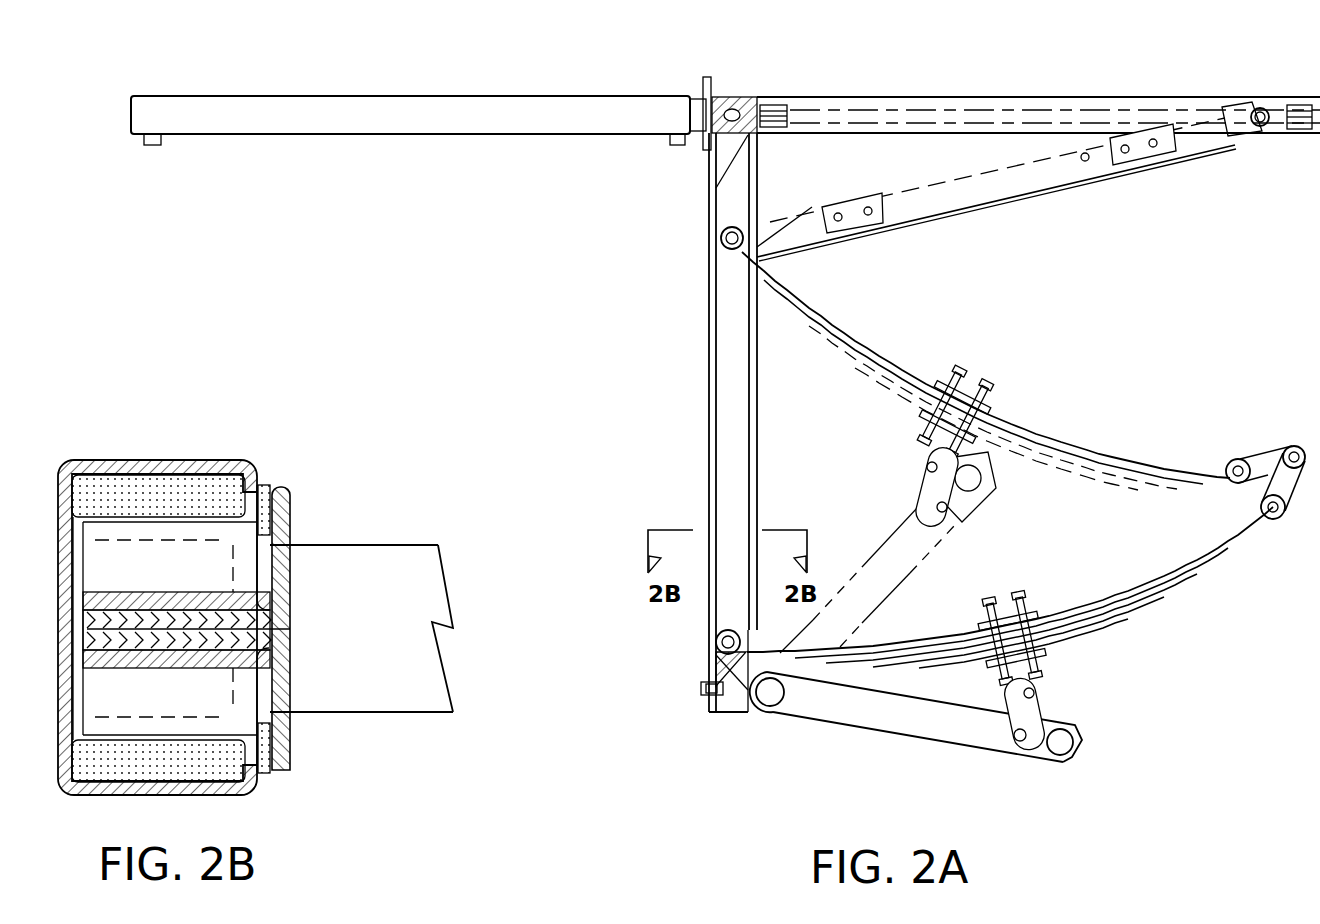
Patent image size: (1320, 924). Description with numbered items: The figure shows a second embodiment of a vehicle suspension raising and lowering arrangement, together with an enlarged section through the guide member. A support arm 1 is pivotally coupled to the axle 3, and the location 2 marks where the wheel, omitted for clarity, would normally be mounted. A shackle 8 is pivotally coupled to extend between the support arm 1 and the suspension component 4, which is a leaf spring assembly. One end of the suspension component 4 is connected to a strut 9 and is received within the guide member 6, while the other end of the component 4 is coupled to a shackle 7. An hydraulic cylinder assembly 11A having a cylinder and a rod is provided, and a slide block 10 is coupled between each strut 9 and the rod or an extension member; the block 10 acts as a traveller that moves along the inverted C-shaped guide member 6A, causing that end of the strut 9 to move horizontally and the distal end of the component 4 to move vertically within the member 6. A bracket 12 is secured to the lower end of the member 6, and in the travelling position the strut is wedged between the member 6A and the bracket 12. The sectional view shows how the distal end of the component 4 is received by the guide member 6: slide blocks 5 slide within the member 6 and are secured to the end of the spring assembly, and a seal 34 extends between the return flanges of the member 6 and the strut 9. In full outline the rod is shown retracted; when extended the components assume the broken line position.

In FIG. 2A, the support arm 1 is at (915, 738).
In FIG. 2A, the wheel mounting location 2 is at (1062, 760).
In FIG. 2A, the axle 3 is at (773, 705).
In FIG. 2A, the suspension component 4 is at (1177, 593).
In FIG. 2B, the suspension component 4 is at (357, 545).
In FIG. 2A, the slide blocks 5 is at (708, 662).
In FIG. 2B, the slide blocks 5 is at (197, 483).
In FIG. 2A, the guide member 6 is at (708, 452).
In FIG. 2B, the guide member 6 is at (137, 460).
In FIG. 2A, the guide member 6A is at (1093, 97).
In FIG. 2A, the shackle 7 is at (1303, 490).
In FIG. 2A, the shackle 8 is at (1043, 688).
In FIG. 2A, the strut 9 is at (753, 462).
In FIG. 2B, the strut 9 is at (290, 517).
In FIG. 2A, the slide block 10 is at (762, 97).
In FIG. 2A, the hydraulic cylinder assembly 11A is at (498, 97).
In FIG. 2A, the bracket 12 is at (700, 688).
In FIG. 2B, the seal 34 is at (263, 483).